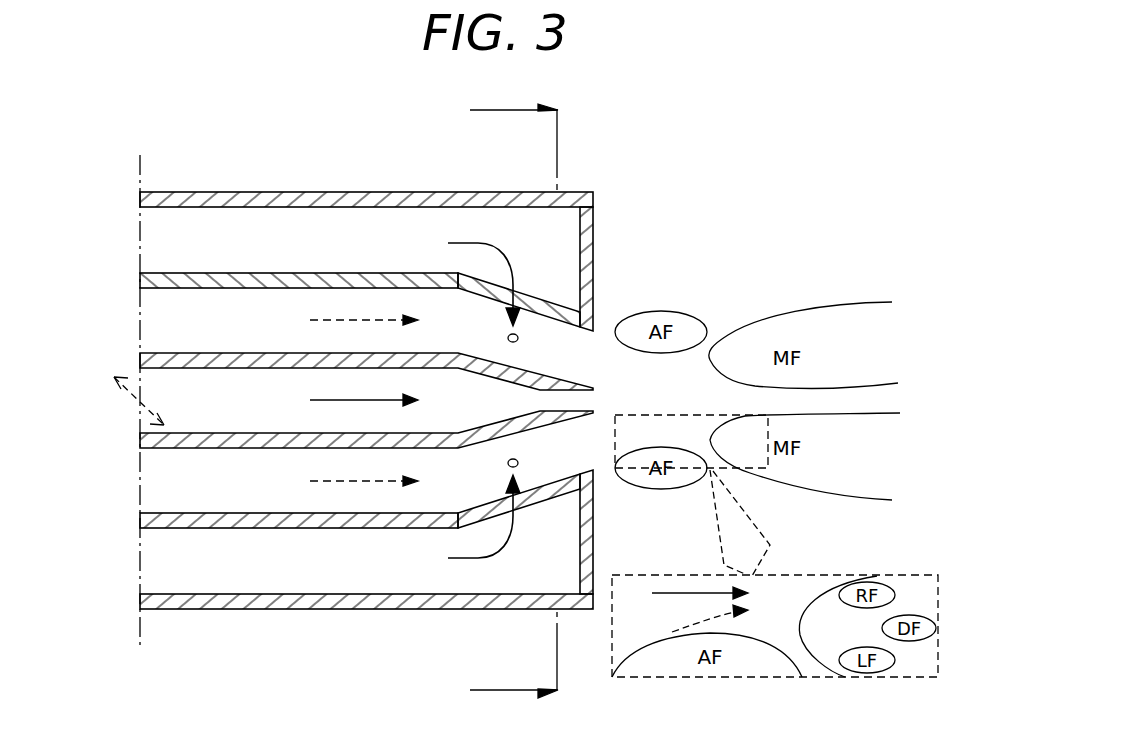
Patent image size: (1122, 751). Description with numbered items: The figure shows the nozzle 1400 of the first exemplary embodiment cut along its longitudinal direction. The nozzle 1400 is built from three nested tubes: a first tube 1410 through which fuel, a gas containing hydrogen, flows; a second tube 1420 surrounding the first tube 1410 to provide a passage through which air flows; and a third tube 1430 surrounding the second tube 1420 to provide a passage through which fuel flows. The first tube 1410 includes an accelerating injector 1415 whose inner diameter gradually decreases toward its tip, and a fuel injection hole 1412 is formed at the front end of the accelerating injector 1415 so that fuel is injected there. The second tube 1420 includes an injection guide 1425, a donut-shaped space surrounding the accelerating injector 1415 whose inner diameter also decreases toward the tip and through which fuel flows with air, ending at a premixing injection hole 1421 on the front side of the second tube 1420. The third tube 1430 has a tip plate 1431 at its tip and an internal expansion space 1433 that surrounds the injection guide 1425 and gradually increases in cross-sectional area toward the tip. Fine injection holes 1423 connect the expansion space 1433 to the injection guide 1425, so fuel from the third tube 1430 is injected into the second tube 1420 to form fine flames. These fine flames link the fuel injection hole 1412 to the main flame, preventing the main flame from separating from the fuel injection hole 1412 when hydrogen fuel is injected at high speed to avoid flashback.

The nozzle 1400 is at (346, 166).
The third tube 1430 is at (140, 200).
The tip plate 1431 is at (597, 240).
The second tube 1420 is at (140, 281).
The injection guide 1425 is at (552, 344).
The fine injection holes 1423 is at (520, 505).
The first tube 1410 is at (140, 362).
The accelerating injector 1415 is at (482, 408).
The expansion space 1433 is at (518, 247).
The premixing injection hole 1421 is at (593, 372).
The fuel injection hole 1412 is at (593, 403).